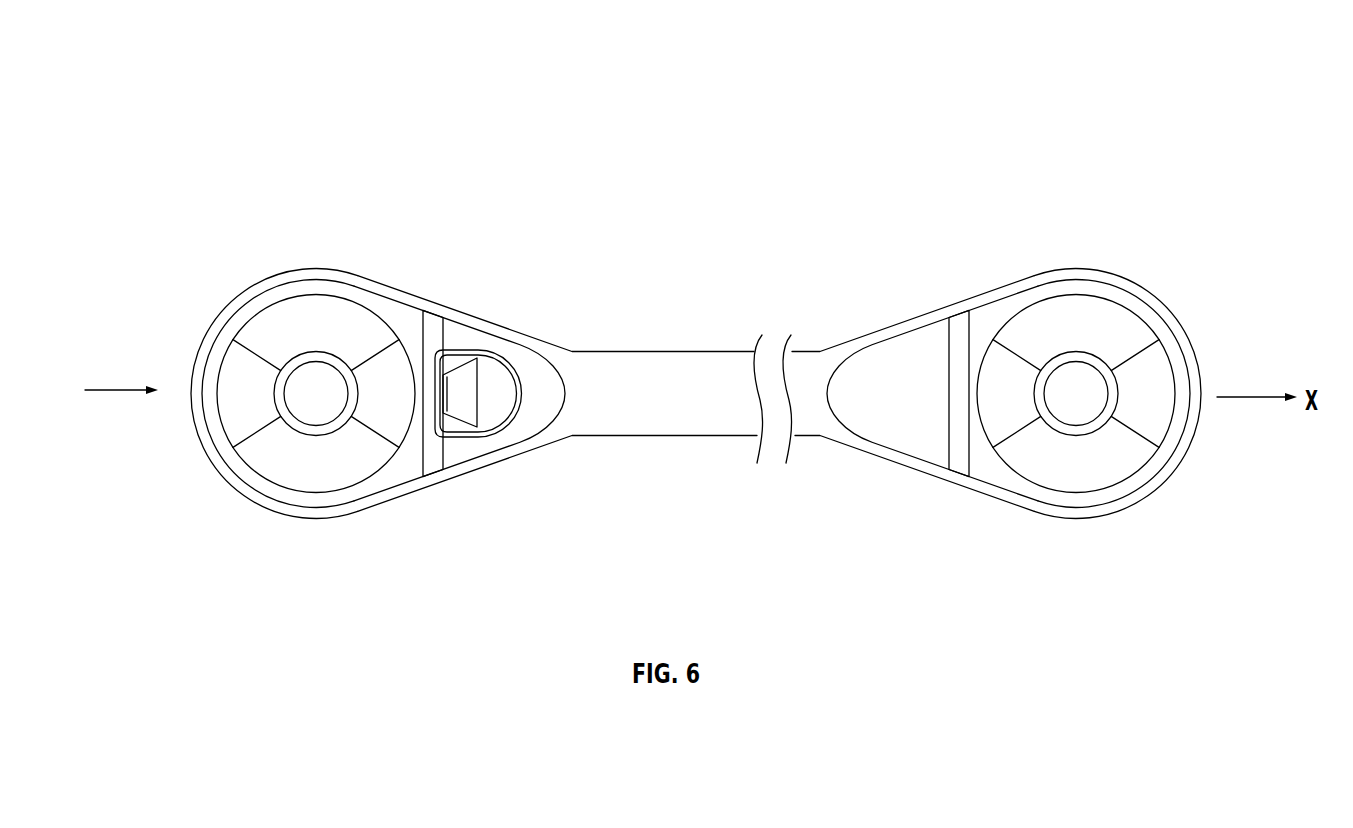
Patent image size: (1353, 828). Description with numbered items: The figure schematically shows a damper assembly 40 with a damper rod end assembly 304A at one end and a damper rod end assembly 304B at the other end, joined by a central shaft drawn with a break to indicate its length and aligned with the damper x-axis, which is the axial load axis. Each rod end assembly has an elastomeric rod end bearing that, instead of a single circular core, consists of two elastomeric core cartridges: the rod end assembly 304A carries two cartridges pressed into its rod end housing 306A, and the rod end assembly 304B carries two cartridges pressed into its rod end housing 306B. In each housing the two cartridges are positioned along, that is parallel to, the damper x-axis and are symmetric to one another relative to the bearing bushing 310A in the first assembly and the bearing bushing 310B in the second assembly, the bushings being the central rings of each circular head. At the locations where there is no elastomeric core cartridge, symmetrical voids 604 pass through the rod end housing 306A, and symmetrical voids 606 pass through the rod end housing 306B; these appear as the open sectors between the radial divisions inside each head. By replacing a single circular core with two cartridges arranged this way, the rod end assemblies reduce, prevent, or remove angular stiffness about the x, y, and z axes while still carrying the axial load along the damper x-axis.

The damper assembly 40 is at (612, 129).
The damper rod end assembly 304A is at (275, 388).
The damper rod end assembly 304B is at (1097, 392).
The rod end housing 306A is at (255, 503).
The rod end housing 306B is at (1005, 497).
The bearing bushing 310A is at (318, 432).
The bearing bushing 310B is at (1083, 428).
The symmetrical voids 604 is at (292, 348).
The symmetrical voids 606 is at (1058, 392).